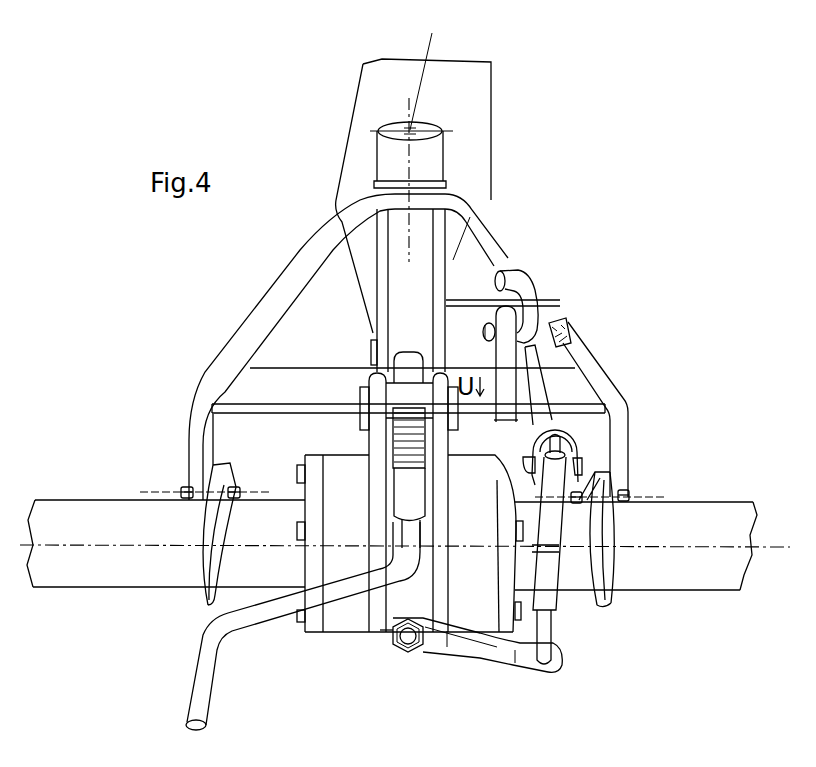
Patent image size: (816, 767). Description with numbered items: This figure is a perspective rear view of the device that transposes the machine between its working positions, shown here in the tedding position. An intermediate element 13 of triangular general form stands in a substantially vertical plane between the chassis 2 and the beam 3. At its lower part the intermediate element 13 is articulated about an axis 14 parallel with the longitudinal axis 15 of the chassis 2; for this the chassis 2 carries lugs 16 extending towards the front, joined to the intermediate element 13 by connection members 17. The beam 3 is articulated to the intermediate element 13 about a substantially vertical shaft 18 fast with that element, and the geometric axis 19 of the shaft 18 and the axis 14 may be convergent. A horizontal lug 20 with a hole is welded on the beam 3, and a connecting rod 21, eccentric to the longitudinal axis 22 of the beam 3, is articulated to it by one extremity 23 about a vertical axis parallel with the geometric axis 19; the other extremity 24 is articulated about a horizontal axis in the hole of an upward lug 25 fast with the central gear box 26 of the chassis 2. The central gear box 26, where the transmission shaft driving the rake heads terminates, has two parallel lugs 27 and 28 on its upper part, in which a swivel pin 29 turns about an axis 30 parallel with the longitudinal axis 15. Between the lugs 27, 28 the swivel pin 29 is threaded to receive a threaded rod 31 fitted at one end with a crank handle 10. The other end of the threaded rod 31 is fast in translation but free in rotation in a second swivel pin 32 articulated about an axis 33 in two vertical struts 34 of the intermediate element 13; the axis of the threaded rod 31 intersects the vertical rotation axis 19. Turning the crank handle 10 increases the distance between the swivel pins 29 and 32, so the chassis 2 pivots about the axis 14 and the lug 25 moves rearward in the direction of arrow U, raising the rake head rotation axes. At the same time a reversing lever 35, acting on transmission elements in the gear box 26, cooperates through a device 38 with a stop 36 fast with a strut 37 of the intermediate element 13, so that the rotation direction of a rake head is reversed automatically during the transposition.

The chassis 2 is at (108, 578).
The beam 3 is at (482, 110).
The crank handle 10 is at (198, 658).
The intermediate element 13 is at (303, 257).
The axis 14 is at (153, 492).
The longitudinal axis 15 is at (723, 550).
The lugs 16 is at (207, 570).
The connection members 17 is at (180, 490).
The shaft 18 is at (430, 127).
The geometric axis 19 is at (410, 130).
The lug 20 is at (508, 263).
The connecting rod 21 is at (530, 304).
The longitudinal axis 22 is at (427, 58).
The extremity 23 is at (518, 288).
The extremity 24 is at (483, 331).
The lug 25 is at (497, 428).
The central gear box 26 is at (358, 627).
The lug 27 is at (438, 493).
The lug 28 is at (378, 493).
The swivel pin 29 is at (382, 397).
The axis 30 is at (378, 410).
The threaded rod 31 is at (393, 465).
The second swivel pin 32 is at (410, 342).
The axis 33 is at (372, 352).
The vertical struts 34 is at (380, 283).
The reversing lever 35 is at (475, 652).
The stop 36 is at (548, 415).
The strut 37 is at (285, 383).
The device 38 is at (547, 590).